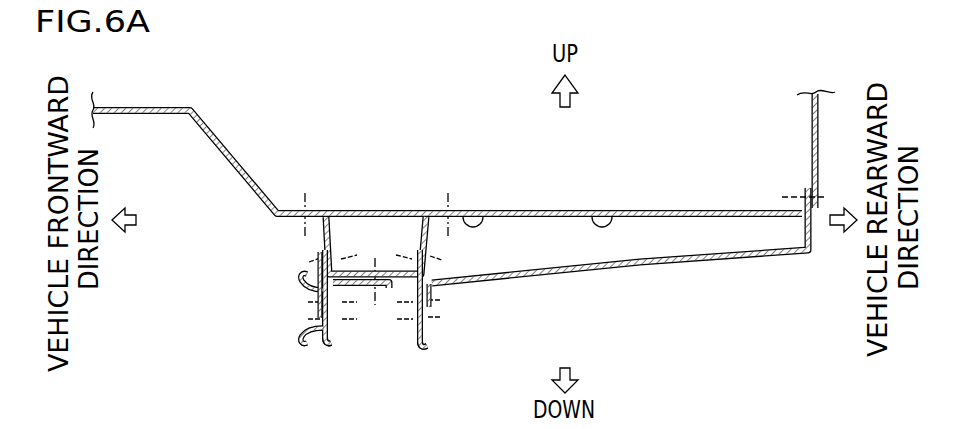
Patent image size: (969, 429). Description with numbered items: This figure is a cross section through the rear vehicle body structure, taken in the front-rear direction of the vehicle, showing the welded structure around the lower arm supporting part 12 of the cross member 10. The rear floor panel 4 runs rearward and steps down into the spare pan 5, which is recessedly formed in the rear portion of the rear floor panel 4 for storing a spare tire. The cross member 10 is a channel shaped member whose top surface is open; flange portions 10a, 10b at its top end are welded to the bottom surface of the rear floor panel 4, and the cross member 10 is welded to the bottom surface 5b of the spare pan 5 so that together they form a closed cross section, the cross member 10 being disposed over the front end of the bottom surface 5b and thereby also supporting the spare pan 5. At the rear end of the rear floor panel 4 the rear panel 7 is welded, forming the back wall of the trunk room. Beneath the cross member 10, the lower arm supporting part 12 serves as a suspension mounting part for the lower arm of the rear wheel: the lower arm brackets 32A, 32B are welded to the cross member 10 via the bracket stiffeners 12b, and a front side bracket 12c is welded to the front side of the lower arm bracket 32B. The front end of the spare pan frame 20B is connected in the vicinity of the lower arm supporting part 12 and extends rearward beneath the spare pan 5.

The rear floor panel 4 is at (446, 153).
The spare pan 5 is at (220, 142).
The bottom surface of the spare pan 5b is at (608, 214).
The rear panel 7 is at (819, 140).
The cross member 10 is at (422, 231).
The flange portion 10a is at (291, 221).
The flange portion 10b is at (481, 214).
The lower arm supporting part 12 is at (448, 337).
The bracket stiffener 12b is at (416, 330).
The front side bracket 12c is at (302, 331).
The spare pan frame 20B is at (621, 266).
The lower arm bracket 32A is at (428, 266).
The lower arm bracket 32B is at (327, 283).